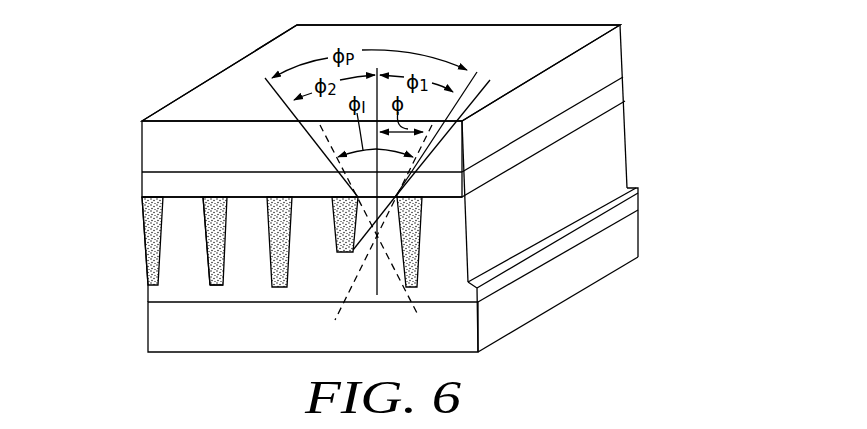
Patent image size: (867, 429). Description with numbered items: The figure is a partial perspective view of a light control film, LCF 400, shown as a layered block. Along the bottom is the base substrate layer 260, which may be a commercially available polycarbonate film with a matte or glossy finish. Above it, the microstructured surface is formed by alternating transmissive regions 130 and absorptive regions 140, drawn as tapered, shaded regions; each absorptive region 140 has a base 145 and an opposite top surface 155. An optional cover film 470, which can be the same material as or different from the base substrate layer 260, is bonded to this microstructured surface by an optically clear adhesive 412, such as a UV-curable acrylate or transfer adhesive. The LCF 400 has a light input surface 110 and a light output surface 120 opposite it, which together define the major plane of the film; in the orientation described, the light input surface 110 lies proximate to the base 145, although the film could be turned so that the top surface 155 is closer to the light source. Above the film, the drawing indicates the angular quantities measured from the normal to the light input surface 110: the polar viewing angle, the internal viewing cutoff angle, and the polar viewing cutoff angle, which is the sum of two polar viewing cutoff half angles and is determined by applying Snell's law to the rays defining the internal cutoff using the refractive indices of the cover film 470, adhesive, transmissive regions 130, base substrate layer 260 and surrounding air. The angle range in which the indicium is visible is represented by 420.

The light input surface 110 is at (285, 47).
The light output surface 120 is at (568, 297).
The transmissive regions 130 is at (178, 245).
The absorptive region 140 is at (207, 273).
The base 145 is at (216, 193).
The top surface 155 is at (213, 286).
The base substrate layer 260 is at (305, 340).
The LCF 400 is at (649, 27).
The adhesive 412 is at (153, 183).
The angle range in which the indicium is visible 420 is at (489, 79).
The cover film 470 is at (282, 160).